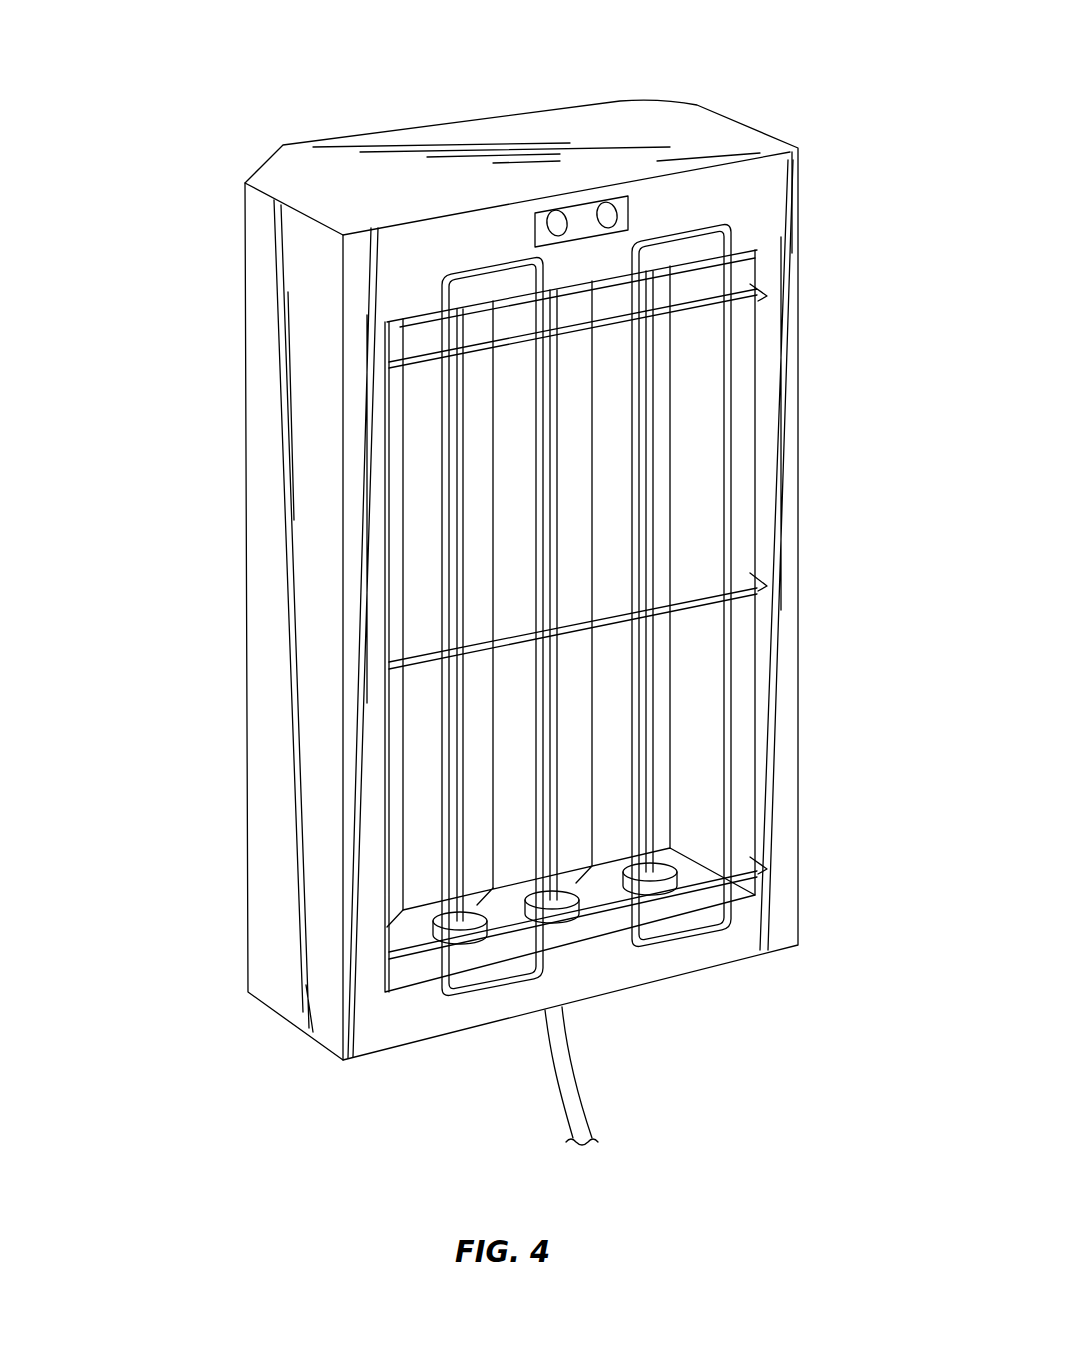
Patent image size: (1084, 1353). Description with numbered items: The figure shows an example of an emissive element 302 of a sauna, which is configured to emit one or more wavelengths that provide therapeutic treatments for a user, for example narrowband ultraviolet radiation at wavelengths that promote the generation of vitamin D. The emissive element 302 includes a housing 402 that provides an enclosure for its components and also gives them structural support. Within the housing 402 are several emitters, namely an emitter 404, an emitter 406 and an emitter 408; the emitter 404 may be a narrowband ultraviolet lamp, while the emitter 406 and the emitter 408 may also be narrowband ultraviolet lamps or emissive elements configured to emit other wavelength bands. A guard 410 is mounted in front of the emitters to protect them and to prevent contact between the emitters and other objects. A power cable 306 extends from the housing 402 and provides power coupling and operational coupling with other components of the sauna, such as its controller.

The emissive element 302 is at (833, 32).
The housing 402 is at (266, 158).
The emitter 404 is at (558, 540).
The emitter 406 is at (657, 377).
The emitter 408 is at (465, 598).
The guard 410 is at (490, 268).
The power cable 306 is at (587, 1087).